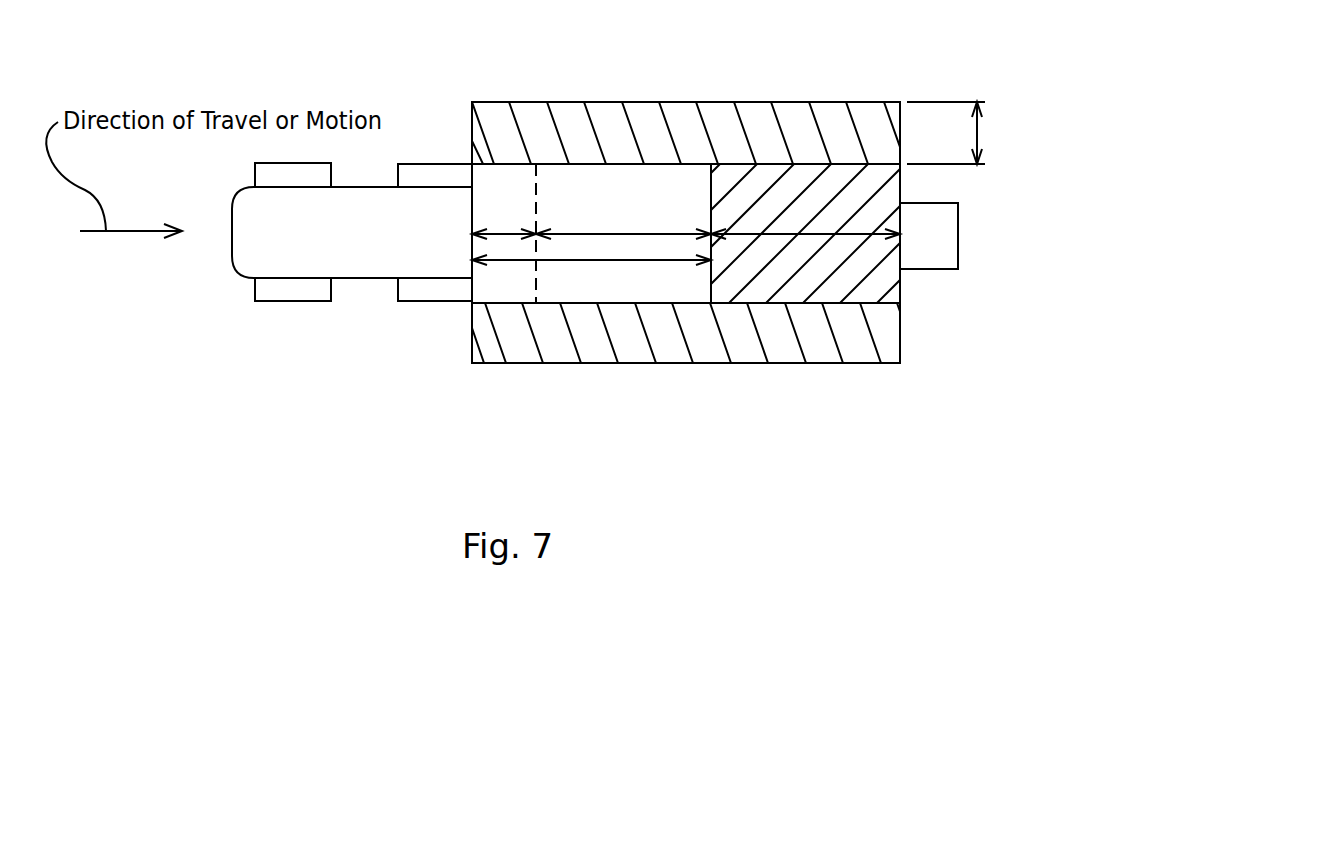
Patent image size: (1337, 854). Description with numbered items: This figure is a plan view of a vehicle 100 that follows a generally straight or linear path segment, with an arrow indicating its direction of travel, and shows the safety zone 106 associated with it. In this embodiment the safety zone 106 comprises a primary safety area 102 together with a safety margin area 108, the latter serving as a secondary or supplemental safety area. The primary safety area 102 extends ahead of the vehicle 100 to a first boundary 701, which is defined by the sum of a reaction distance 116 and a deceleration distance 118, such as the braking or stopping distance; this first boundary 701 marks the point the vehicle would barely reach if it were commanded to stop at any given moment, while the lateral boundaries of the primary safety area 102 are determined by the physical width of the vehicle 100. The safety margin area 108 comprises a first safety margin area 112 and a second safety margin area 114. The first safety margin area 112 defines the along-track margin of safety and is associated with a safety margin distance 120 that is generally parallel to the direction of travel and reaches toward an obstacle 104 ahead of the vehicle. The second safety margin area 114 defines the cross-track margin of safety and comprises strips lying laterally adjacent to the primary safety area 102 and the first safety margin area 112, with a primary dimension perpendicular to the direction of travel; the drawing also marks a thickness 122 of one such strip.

The vehicle 100 is at (357, 262).
The primary safety area 102 is at (597, 287).
The obstacle 104 is at (948, 233).
The safety zone 106 is at (718, 444).
The safety margin area 108 is at (810, 403).
The first safety margin area 112 is at (890, 280).
The second safety margin area 114 is at (870, 104).
The reaction distance 116 is at (505, 231).
The deceleration distance 118 is at (600, 231).
The safety margin distance 120 is at (774, 233).
The thickness of second safety margin area 122 is at (978, 134).
The first boundary 701 is at (618, 262).